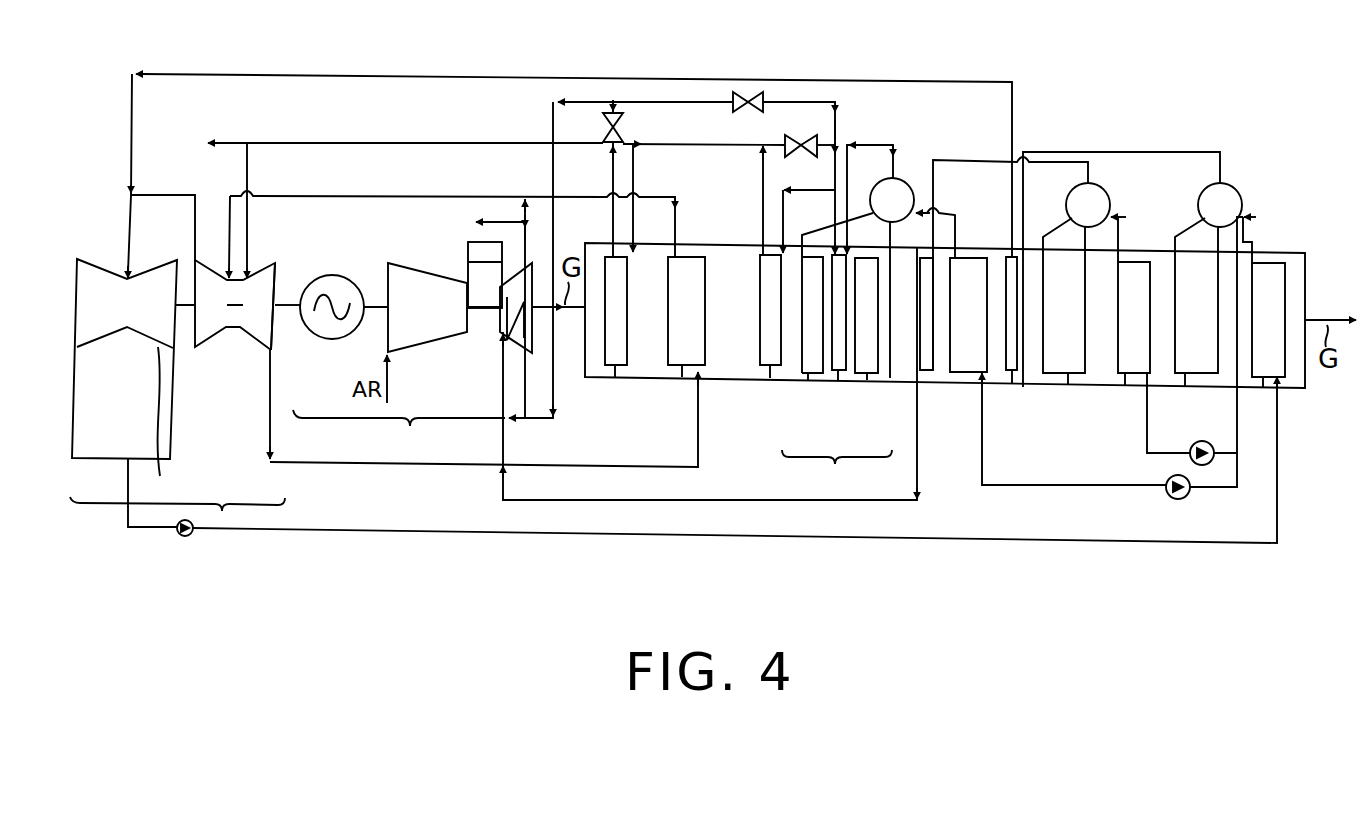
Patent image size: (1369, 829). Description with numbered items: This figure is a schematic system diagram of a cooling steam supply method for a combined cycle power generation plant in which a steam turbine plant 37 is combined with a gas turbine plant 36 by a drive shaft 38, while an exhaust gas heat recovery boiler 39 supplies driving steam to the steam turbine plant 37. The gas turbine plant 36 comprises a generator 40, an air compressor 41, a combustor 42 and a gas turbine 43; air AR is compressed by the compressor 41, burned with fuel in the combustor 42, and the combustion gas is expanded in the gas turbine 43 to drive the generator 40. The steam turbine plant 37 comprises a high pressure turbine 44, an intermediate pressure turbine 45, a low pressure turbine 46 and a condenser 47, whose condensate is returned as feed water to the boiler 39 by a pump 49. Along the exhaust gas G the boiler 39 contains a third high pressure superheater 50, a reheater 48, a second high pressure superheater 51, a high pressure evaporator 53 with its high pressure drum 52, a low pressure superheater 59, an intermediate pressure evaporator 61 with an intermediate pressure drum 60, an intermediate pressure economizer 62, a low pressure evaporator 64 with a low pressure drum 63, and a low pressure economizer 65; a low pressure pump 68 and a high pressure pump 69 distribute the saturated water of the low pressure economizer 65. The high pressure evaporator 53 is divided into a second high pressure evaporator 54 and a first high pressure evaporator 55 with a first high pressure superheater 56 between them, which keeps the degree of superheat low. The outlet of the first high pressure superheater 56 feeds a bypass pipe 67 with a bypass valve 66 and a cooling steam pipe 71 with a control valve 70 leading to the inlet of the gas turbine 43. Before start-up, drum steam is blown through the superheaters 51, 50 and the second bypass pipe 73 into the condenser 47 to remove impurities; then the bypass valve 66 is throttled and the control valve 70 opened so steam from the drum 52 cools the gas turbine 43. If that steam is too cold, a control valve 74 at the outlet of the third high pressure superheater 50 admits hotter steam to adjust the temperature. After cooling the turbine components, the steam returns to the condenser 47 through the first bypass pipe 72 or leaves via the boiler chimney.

The gas turbine plant 36 is at (399, 430).
The steam turbine plant 37 is at (177, 515).
The drive shaft 38 is at (291, 305).
The exhaust gas heat recovery boiler 39 is at (735, 380).
The generator 40 is at (322, 340).
The air compressor 41 is at (415, 343).
The combustor 42 is at (485, 262).
The gas turbine 43 is at (527, 358).
The high pressure turbine 44 is at (260, 343).
The intermediate pressure turbine 45 is at (195, 347).
The low pressure turbine 46 is at (158, 425).
The condenser 47 is at (98, 459).
The reheater 48 is at (682, 377).
The pump 49 is at (183, 537).
The third high pressure superheater 50 is at (615, 377).
The second high pressure superheater 51 is at (770, 378).
The high pressure drum 52 is at (907, 178).
The high pressure evaporator 53 is at (837, 474).
The second high pressure evaporator 54 is at (808, 380).
The first high pressure evaporator 55 is at (867, 380).
The first high pressure superheater 56 is at (838, 380).
The low pressure superheater 59 is at (1015, 383).
The intermediate pressure drum 60 is at (1119, 184).
The intermediate pressure evaporator 61 is at (1068, 385).
The intermediate pressure economizer 62 is at (1123, 385).
The low pressure drum 63 is at (1240, 192).
The low pressure evaporator 64 is at (1185, 386).
The low pressure economizer 65 is at (1262, 387).
The bypass valve 66 is at (795, 137).
The bypass pipe 67 is at (837, 130).
The low pressure pump 68 is at (1212, 435).
The high pressure pump 69 is at (1182, 500).
The control valve 70 is at (747, 98).
The cooling steam pipe 71 is at (785, 102).
The first bypass pipe 72 is at (462, 212).
The second bypass pipe 73 is at (190, 138).
The control valve 74 is at (603, 122).